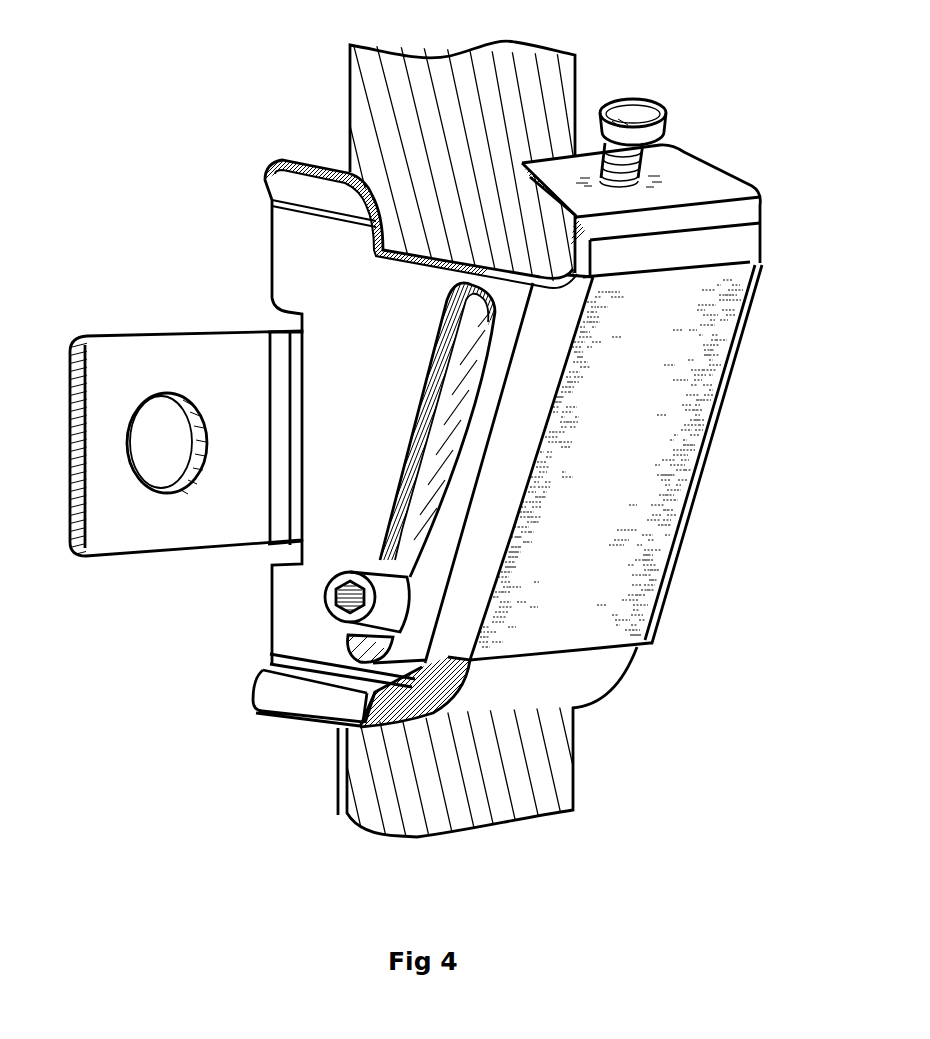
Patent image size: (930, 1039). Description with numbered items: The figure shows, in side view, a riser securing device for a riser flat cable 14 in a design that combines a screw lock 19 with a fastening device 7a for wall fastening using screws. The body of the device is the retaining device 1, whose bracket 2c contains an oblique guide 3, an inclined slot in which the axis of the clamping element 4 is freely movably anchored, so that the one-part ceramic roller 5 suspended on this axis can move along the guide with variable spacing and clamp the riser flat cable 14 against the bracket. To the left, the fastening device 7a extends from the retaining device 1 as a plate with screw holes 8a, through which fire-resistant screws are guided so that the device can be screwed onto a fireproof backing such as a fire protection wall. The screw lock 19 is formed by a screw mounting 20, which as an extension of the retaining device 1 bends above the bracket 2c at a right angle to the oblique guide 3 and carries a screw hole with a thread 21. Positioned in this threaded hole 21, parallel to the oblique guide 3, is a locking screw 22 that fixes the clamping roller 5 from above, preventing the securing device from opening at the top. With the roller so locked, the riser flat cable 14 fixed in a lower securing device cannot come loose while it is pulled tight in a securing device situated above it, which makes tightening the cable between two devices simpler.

The retaining device 1 is at (232, 710).
The bracket 2c is at (643, 518).
The oblique guide 3 is at (440, 360).
The axis of the clamping element 4 is at (330, 605).
The ceramic roller 5 is at (580, 677).
The fastening device 7a is at (172, 357).
The screw holes 8a is at (170, 490).
The riser flat cable 14 is at (375, 113).
The screw lock 19 is at (683, 119).
The screw mounting 20 is at (690, 177).
The screw hole with a thread 21 is at (637, 177).
The locking screw 22 is at (668, 117).